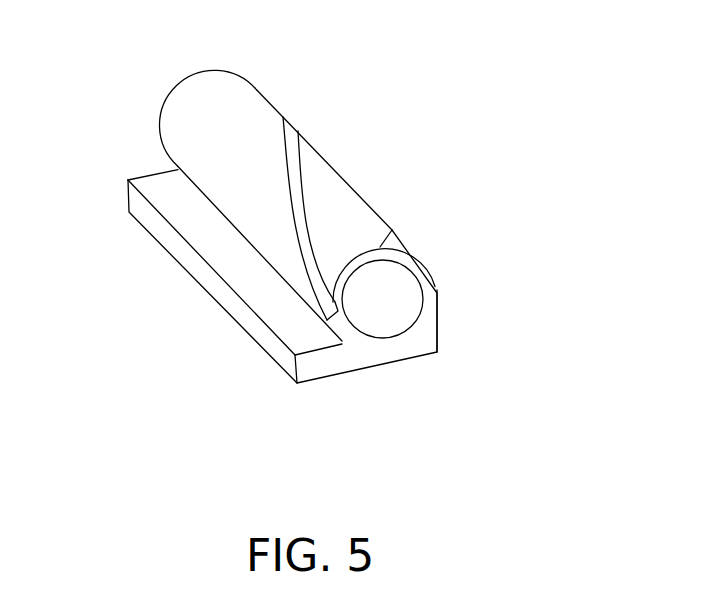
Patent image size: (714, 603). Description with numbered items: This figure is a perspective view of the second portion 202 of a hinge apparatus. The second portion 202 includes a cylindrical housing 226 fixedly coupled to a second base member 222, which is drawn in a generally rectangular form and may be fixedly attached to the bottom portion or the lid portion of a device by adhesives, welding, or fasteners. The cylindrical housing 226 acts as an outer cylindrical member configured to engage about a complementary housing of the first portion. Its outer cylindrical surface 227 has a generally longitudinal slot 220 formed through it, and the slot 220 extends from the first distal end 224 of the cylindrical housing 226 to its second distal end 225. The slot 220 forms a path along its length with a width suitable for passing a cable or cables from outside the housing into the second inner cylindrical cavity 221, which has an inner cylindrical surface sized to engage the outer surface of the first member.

The second portion 202 is at (533, 53).
The slot 220 is at (295, 157).
The second inner cylindrical cavity 221 is at (399, 318).
The second base member 222 is at (143, 176).
The first distal end 224 is at (214, 73).
The second distal end 225 is at (393, 229).
The cylindrical housing 226 is at (352, 185).
The outer cylindrical surface 227 is at (361, 228).